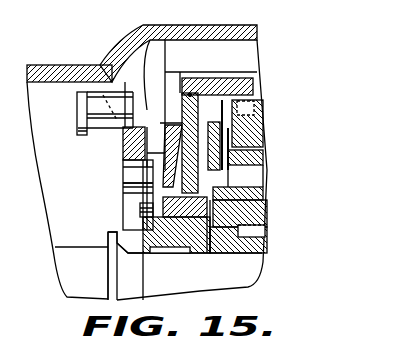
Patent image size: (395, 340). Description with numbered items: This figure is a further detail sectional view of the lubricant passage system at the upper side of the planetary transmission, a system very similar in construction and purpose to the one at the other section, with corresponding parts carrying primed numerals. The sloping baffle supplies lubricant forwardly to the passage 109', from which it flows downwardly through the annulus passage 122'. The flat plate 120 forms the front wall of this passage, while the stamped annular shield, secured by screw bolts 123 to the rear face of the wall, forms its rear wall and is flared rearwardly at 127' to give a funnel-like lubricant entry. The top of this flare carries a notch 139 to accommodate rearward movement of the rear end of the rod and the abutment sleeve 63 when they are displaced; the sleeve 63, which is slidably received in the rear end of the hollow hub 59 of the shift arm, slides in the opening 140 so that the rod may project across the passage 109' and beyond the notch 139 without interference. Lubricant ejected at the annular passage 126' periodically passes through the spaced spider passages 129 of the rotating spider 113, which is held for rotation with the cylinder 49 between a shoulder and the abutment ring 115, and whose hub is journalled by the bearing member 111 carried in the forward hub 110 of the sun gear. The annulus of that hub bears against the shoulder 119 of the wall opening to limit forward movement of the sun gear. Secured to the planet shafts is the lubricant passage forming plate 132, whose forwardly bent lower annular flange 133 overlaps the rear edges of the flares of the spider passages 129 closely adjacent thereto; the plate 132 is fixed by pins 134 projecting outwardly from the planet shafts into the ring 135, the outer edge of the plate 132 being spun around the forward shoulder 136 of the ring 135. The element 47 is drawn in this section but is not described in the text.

The passage 109' is at (167, 46).
The abutment sleeve 63 is at (95, 100).
The hollow hub 59 is at (80, 108).
The opening 140 is at (147, 110).
The abutment ring 115 is at (190, 95).
The cylinder 49 is at (258, 90).
The lubricant passage forming plate 132 is at (220, 120).
The forward shoulder 136 is at (243, 116).
The spider 113 is at (263, 127).
The pin 134 is at (265, 148).
The annular lubricant passage 126' is at (236, 182).
The annular flange 133 is at (200, 197).
The spider passage 129 is at (213, 203).
The shaft hub 47 is at (263, 218).
The notch 139 is at (168, 126).
The shoulder 119 is at (160, 157).
The flare 127' is at (110, 187).
The annulus passage 122' is at (109, 205).
The plate 120 is at (143, 218).
The screw bolt 123 is at (185, 207).
The bearing member 111 is at (183, 242).
The forward hub 110 is at (163, 253).
The ring 135 is at (218, 235).